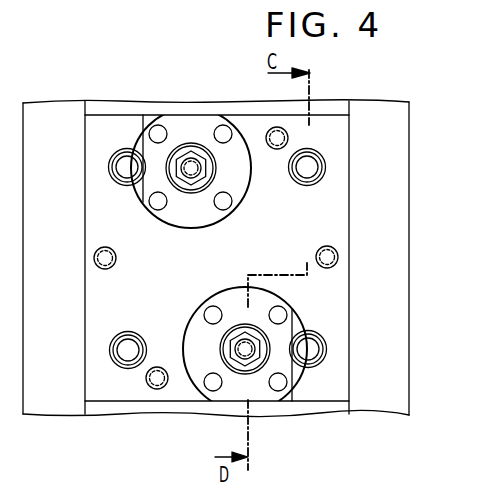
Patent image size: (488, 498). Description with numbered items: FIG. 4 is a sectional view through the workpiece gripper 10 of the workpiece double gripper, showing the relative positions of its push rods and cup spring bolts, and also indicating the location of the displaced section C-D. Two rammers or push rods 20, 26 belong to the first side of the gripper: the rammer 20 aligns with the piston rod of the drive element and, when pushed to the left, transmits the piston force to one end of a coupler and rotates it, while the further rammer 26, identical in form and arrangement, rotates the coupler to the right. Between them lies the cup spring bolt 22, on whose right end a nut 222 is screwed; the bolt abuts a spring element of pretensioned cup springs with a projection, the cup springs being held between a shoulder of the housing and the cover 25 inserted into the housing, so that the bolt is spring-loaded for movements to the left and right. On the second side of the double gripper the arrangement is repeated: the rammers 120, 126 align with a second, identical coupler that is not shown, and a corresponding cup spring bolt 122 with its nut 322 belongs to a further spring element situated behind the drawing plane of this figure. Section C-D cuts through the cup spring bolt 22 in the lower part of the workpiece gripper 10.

The workpiece gripper 10 is at (396, 262).
The rammer or push rod 20 is at (310, 165).
The cup spring bolt 22 is at (254, 347).
The cover 25 is at (202, 363).
The rammer or push rod 26 is at (312, 350).
The rammer or push rod 120 is at (125, 163).
The cup spring bolt 122 is at (192, 158).
The rammer or push rod 126 is at (125, 350).
The nut 222 is at (248, 363).
The nut 322 is at (205, 172).